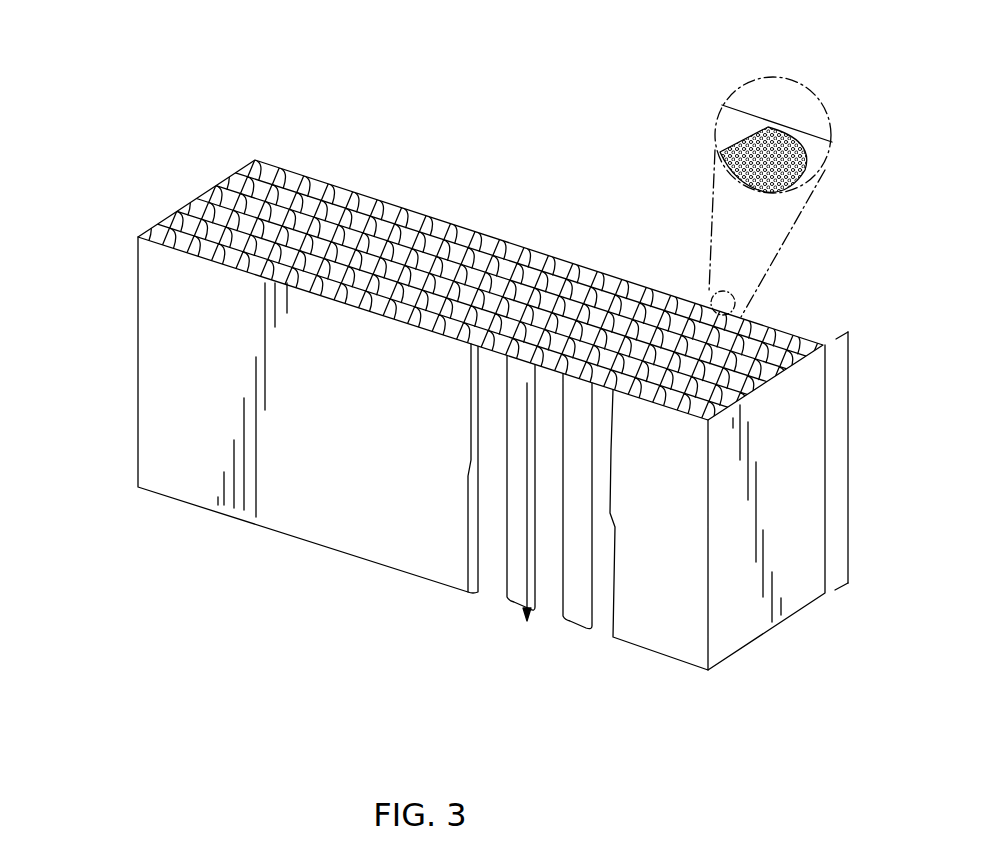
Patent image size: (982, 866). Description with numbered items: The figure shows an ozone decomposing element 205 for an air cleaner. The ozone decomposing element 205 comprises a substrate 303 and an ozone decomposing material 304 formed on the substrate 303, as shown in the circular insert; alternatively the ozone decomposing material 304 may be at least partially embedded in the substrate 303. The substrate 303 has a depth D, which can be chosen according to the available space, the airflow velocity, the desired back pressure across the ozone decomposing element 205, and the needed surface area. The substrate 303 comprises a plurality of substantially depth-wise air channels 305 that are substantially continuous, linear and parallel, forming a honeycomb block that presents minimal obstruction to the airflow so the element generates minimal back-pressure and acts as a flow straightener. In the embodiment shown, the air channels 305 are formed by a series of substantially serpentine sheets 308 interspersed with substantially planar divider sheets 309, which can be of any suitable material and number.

The ozone decomposing element 205 is at (220, 578).
The substrate 303 is at (155, 343).
The ozone decomposing material 304 is at (767, 126).
The air channels 305 is at (475, 269).
The serpentine sheets 308 is at (337, 190).
The planar divider sheets 309 is at (398, 208).
The depth D is at (848, 463).